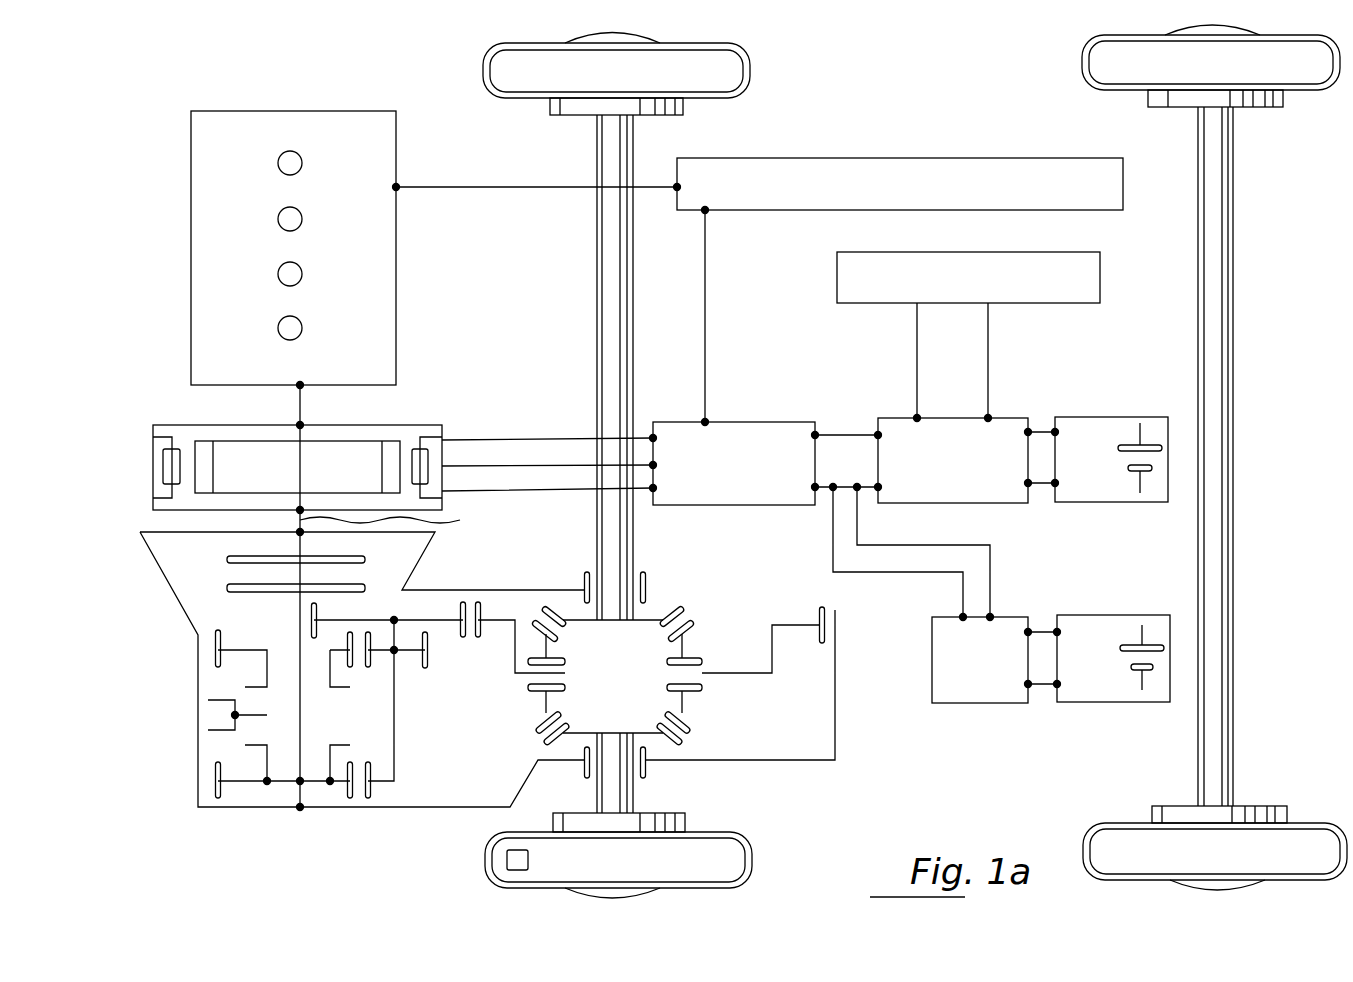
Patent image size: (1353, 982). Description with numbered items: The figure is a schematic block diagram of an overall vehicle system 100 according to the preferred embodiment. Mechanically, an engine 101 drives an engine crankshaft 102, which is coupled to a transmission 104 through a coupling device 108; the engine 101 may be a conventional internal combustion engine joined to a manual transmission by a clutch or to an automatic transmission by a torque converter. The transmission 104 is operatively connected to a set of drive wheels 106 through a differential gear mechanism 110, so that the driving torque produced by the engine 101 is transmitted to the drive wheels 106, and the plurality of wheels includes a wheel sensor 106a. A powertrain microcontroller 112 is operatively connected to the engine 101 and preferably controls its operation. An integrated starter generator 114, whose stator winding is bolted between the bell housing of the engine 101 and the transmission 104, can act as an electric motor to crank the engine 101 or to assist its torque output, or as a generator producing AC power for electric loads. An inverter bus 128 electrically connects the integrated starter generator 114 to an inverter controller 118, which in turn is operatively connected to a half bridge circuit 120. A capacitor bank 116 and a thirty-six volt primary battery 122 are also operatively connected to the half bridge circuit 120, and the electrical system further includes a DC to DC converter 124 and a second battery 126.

The vehicle system 100 is at (252, 822).
The engine 101 is at (349, 111).
The engine crankshaft 102 is at (403, 523).
The transmission 104 is at (232, 715).
The drive wheels 106 is at (755, 855).
The wheel sensor 106a is at (505, 860).
The coupling device 108 is at (235, 556).
The differential gear mechanism 110 is at (683, 705).
The powertrain microcontroller 112 is at (978, 158).
The integrated starter generator 114 is at (426, 425).
The capacitor bank 116 is at (1100, 283).
The inverter controller 118 is at (745, 505).
The half bridge circuit 120 is at (995, 503).
The primary battery 122 is at (1095, 503).
The DC to DC converter 124 is at (960, 703).
The second battery 126 is at (1097, 703).
The inverter bus 128 is at (830, 432).